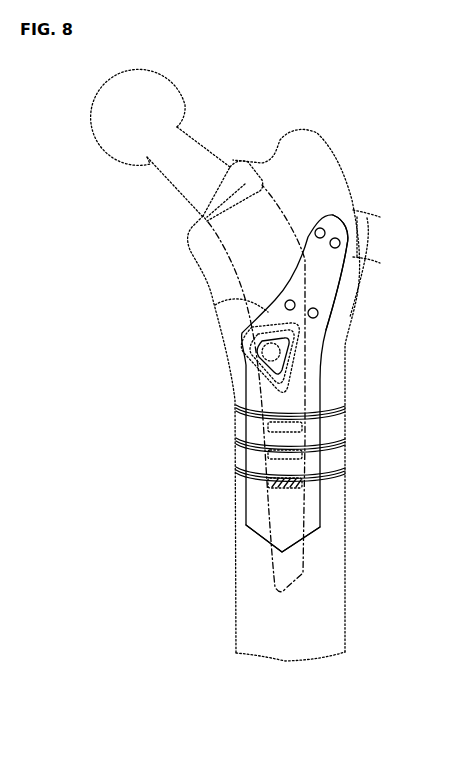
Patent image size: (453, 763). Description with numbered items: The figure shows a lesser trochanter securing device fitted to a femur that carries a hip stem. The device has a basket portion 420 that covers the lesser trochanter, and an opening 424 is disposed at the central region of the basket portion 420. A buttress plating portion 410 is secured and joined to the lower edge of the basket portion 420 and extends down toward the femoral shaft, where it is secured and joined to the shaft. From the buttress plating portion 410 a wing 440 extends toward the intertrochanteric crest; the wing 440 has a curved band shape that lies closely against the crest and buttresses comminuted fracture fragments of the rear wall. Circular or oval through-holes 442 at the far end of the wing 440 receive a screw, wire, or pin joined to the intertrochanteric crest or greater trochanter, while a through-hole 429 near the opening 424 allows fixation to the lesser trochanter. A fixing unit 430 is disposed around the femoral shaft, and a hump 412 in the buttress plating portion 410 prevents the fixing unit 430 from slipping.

The buttress plating portion 410 is at (312, 534).
The hump 412 is at (306, 500).
The basket portion 420 is at (314, 341).
The opening 424 is at (258, 340).
The through-hole 429 is at (215, 305).
The fixing unit 430 is at (334, 422).
The wing 440 is at (347, 262).
The through-hole 442 is at (324, 229).